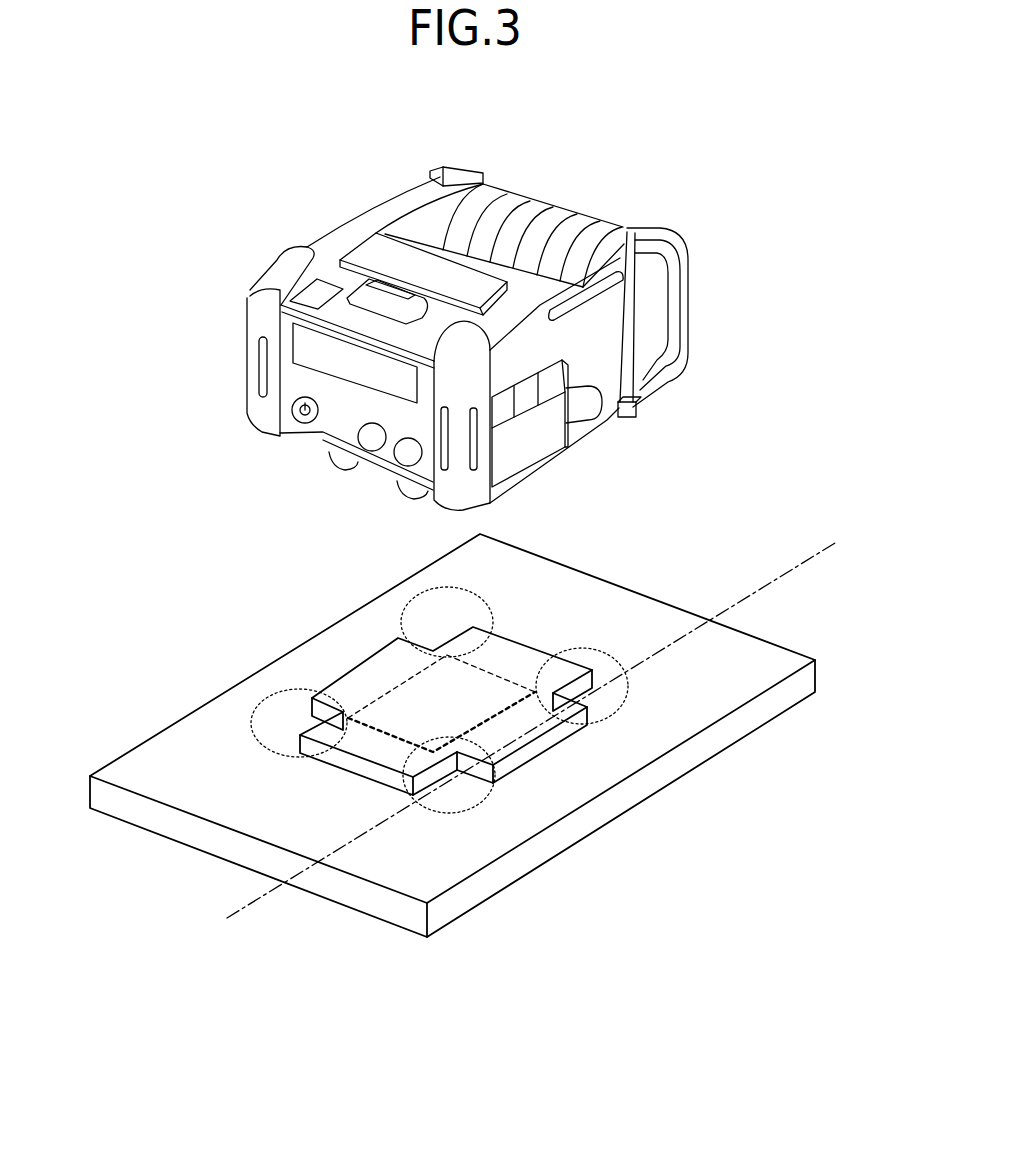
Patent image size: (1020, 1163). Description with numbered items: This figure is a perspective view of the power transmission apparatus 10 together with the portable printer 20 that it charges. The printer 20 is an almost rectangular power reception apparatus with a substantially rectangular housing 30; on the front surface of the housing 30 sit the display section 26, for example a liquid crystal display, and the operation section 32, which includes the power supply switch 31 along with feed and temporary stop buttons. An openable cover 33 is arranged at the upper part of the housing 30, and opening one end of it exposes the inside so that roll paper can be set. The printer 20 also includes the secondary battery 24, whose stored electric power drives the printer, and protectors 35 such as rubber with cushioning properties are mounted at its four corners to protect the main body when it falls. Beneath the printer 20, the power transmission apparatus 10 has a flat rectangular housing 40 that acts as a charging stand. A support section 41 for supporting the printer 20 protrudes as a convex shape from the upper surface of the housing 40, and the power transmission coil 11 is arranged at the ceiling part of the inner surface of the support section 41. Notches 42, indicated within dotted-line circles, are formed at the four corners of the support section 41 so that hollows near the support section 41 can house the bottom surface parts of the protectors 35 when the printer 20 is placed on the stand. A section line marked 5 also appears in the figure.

The section line V-V' 5 is at (251, 905).
The power transmission apparatus 10 is at (698, 580).
The power transmission coil 11 is at (497, 673).
The portable printer 20 is at (622, 192).
The secondary battery 24 is at (538, 450).
The display section 26 is at (393, 380).
The housing 30 is at (347, 215).
The power supply switch 31 is at (300, 413).
The operation section 32 is at (338, 426).
The cover 33 is at (522, 199).
The protectors 35 is at (468, 162).
The housing 40 is at (621, 588).
The support section 41 is at (367, 752).
The notches 42 is at (438, 640).